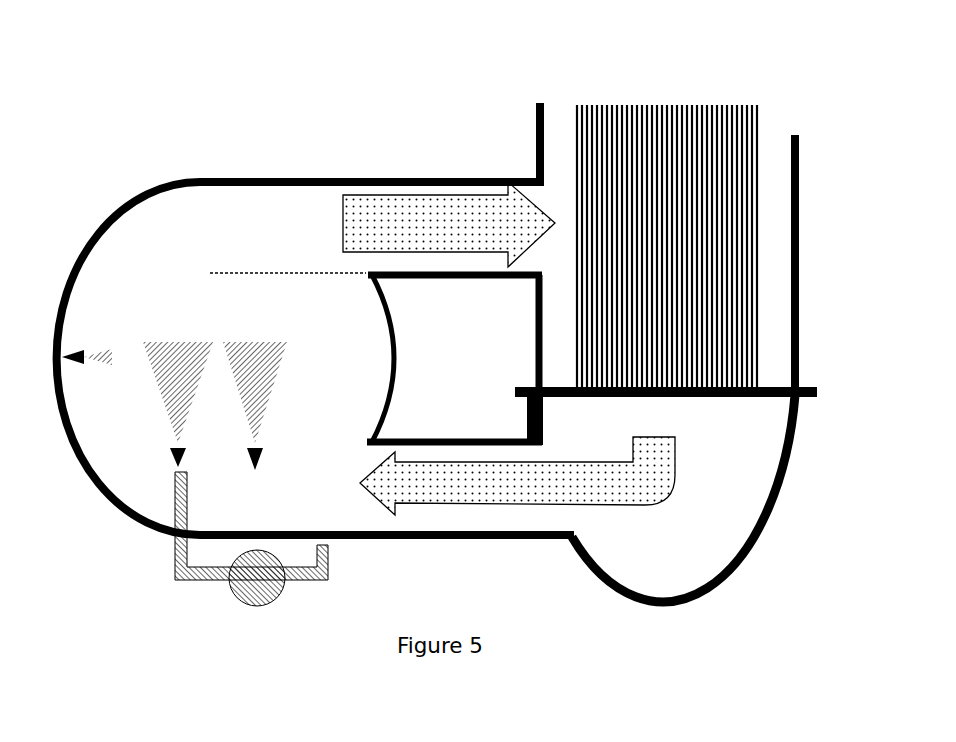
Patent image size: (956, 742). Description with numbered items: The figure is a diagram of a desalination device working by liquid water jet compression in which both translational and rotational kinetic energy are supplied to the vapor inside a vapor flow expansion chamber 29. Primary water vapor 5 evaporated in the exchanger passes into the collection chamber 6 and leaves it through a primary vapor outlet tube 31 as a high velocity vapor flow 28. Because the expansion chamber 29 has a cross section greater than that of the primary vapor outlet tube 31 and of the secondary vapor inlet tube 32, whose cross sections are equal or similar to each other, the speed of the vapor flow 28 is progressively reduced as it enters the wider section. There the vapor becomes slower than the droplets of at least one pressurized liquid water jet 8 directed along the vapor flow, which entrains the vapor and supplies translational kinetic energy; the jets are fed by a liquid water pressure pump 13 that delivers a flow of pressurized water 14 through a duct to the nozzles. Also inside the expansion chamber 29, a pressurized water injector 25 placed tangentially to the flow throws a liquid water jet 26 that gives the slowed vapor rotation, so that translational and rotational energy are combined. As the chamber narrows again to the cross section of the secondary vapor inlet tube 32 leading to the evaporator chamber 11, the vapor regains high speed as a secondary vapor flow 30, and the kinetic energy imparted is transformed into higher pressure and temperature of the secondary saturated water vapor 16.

The primary water vapor 5 is at (666, 409).
The collection chamber 6 is at (683, 498).
The liquid water jet 8 is at (215, 406).
The evaporator chamber 11 is at (557, 144).
The liquid water pressure pump 13 is at (257, 578).
The flow of pressurized water 14 is at (232, 529).
The secondary saturated water vapor 16 is at (653, 246).
The pressurized water injector 25 is at (77, 369).
The liquid water jet tangential to the vapor flow 26 is at (104, 342).
The high velocity vapor flow 28 is at (517, 476).
The vapor flow expansion chamber 29 is at (402, 358).
The secondary vapor flow 30 is at (449, 224).
The primary vapor outlet tube 31 is at (455, 360).
The secondary vapor inlet tube 32 is at (455, 290).